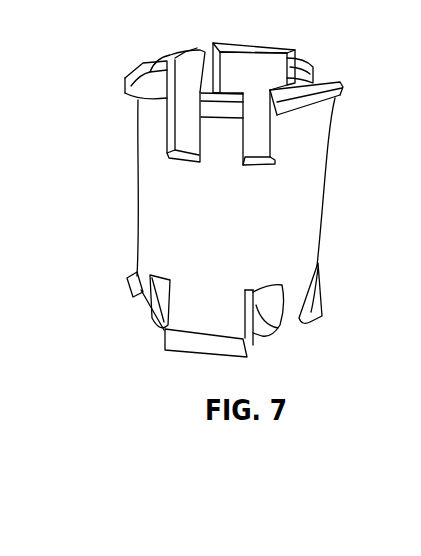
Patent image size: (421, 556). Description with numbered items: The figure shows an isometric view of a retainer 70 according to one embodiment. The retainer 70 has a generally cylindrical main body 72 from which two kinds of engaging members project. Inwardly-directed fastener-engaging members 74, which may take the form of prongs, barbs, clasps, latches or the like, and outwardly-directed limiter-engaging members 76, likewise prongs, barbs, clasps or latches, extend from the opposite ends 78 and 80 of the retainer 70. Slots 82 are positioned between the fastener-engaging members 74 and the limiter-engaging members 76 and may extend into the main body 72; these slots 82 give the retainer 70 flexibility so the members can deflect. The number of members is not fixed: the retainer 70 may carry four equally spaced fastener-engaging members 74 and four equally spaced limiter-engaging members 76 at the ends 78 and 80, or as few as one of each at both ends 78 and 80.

The retainer 70 is at (105, 72).
The main body 72 is at (307, 203).
The fastener-engaging member 74 is at (318, 307).
The limiter-engaging member 76 is at (125, 93).
The end 78 is at (283, 36).
The end 80 is at (287, 325).
The slot 82 is at (161, 63).